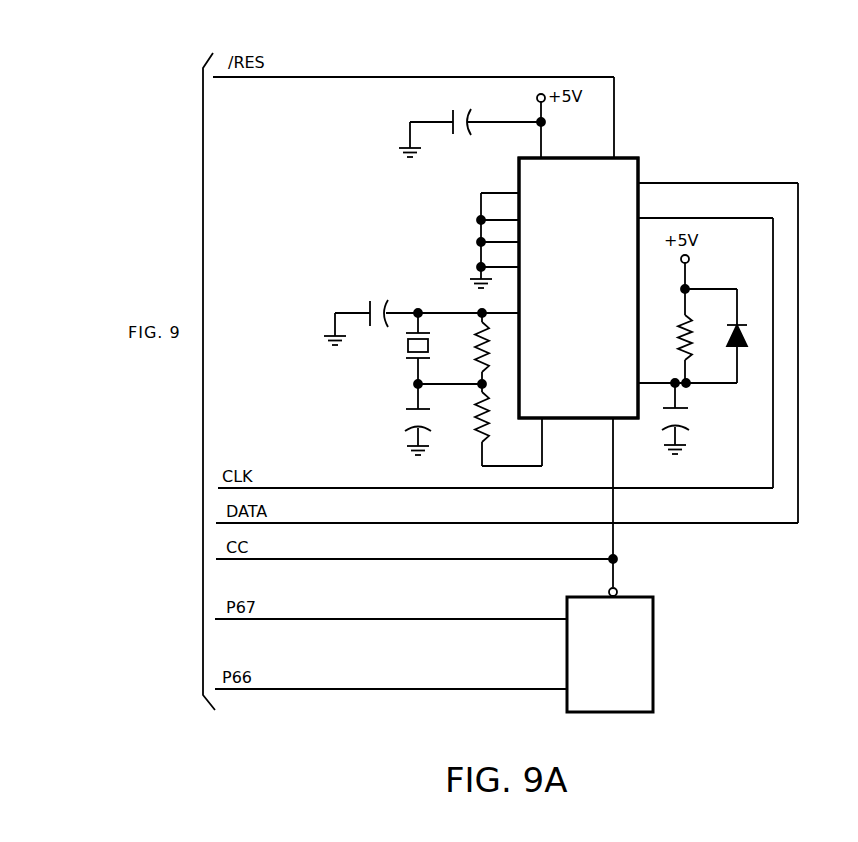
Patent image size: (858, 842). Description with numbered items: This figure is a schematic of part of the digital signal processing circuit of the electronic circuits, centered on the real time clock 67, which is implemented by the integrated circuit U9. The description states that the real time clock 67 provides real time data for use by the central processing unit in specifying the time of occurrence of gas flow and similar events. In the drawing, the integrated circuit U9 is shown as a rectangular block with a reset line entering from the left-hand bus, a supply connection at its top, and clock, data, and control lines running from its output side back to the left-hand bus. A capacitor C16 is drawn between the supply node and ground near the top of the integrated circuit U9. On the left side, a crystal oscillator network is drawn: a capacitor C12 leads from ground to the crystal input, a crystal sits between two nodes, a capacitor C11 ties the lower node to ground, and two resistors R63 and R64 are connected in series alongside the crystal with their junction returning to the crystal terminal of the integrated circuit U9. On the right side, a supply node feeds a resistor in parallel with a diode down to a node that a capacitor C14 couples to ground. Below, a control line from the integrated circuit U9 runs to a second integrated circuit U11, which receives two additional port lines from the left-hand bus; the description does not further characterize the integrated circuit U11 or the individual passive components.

The real time clock 67 is at (631, 157).
The real time clock integrated circuit U9 is at (578, 288).
The integrated circuit U11 is at (610, 654).
The capacitor C16 is at (462, 110).
The capacitor C12 is at (378, 300).
The capacitor C11 is at (403, 419).
The capacitor C14 is at (690, 417).
The resistor R63 is at (474, 361).
The resistor R64 is at (478, 424).